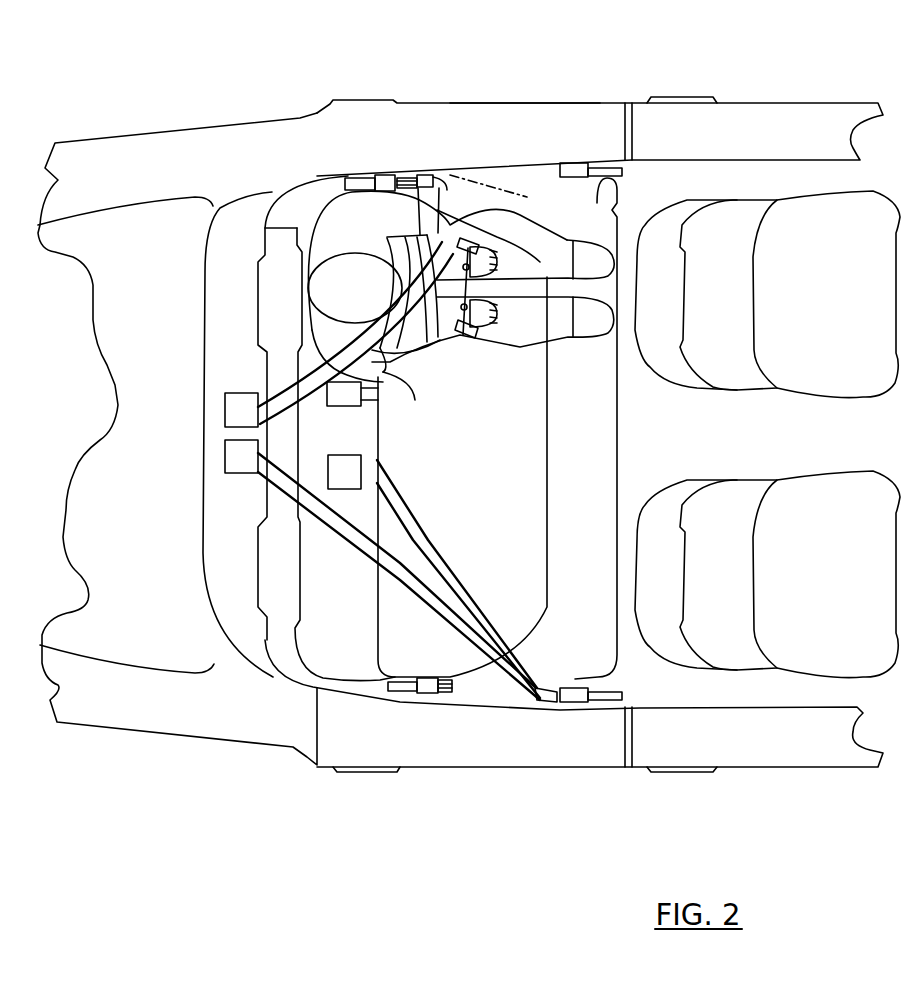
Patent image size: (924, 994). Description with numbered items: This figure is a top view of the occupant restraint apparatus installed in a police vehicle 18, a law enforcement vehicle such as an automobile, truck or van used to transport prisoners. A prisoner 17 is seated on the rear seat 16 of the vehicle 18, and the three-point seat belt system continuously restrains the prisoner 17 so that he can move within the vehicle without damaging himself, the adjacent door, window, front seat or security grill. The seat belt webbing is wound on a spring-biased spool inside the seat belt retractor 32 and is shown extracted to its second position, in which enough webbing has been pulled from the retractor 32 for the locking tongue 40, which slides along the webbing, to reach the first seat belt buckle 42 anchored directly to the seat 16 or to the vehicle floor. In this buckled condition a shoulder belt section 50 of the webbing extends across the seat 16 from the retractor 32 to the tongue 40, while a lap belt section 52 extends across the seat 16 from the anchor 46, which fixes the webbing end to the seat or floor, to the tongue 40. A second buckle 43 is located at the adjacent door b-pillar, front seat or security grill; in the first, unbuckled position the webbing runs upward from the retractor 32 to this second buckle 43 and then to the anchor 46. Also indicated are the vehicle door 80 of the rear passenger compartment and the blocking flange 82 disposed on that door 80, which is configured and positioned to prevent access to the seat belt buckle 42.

The rear seat 16 is at (478, 663).
The prisoner 17 is at (347, 288).
The vehicle 18 is at (803, 120).
The seat belt retractor 32 is at (248, 413).
The seat belt locking tongue 40 is at (427, 177).
The first seat belt buckle 42 is at (396, 190).
The second buckle 43 is at (597, 167).
The anchor 46 is at (343, 400).
The shoulder belt section 50 is at (283, 388).
The lap belt section 52 is at (413, 388).
The vehicle door 80 is at (517, 123).
The blocking flange 82 is at (505, 197).